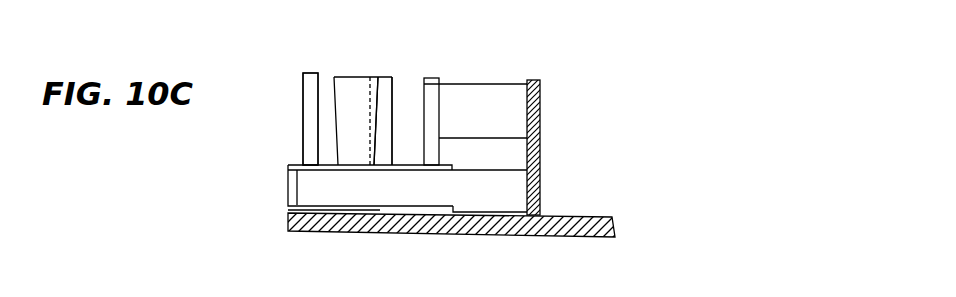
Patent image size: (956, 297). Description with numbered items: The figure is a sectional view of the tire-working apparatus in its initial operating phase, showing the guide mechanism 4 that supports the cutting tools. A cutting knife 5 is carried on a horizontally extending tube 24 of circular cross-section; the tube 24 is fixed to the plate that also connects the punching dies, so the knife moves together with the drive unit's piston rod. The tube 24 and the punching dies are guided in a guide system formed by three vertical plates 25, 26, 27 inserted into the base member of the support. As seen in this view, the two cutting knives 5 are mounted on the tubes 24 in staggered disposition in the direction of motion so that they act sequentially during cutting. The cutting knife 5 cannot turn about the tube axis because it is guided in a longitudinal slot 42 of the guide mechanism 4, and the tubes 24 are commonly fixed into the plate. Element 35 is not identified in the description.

The guide mechanism 4 is at (350, 205).
The cutting knife 5 is at (357, 93).
The tube 24 is at (472, 202).
The vertical plate 25 is at (302, 133).
The vertical plate 26 is at (395, 144).
The vertical plate 27 is at (440, 149).
The posts 35 is at (333, 80).
The longitudinal slot 42 is at (408, 166).